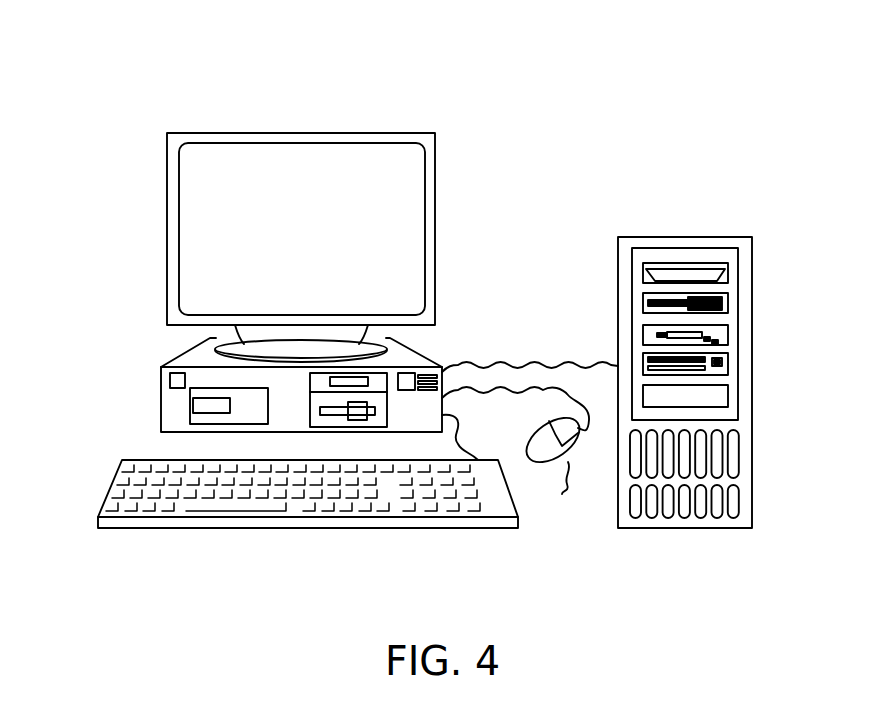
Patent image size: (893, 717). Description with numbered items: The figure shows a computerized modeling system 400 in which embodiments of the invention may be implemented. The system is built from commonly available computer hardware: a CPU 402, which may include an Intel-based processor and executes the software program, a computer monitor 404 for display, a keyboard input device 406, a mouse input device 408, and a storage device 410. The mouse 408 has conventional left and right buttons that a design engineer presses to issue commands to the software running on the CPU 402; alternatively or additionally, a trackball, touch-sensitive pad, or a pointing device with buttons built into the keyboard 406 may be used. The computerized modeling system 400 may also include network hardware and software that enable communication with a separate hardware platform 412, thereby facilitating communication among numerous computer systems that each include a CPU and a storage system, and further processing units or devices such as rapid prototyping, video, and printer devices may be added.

The computerized modeling system 400 is at (497, 103).
The CPU 402 is at (195, 403).
The computer monitor 404 is at (412, 212).
The keyboard input device 406 is at (116, 478).
The mouse input device 408 is at (553, 465).
The storage device 410 is at (377, 398).
The hardware platform 412 is at (687, 237).